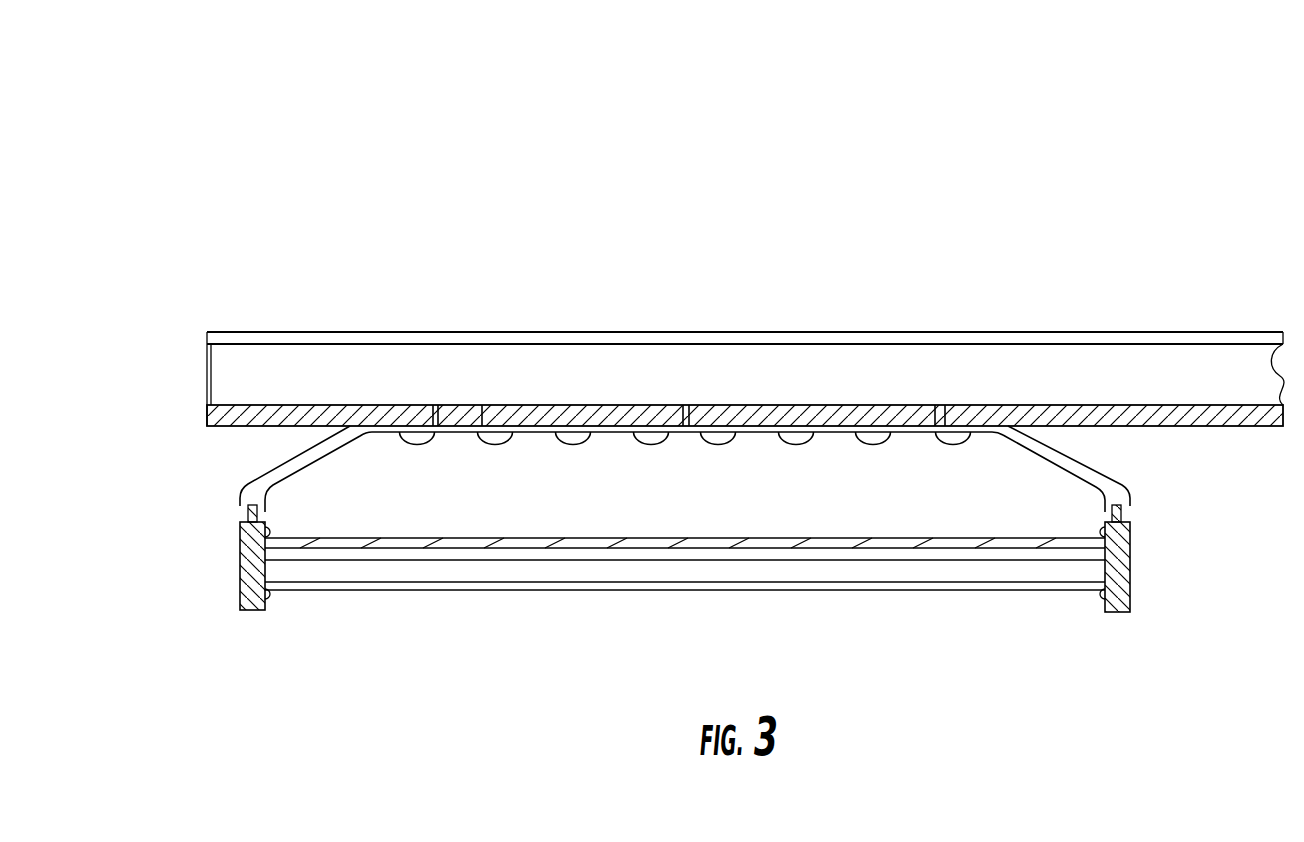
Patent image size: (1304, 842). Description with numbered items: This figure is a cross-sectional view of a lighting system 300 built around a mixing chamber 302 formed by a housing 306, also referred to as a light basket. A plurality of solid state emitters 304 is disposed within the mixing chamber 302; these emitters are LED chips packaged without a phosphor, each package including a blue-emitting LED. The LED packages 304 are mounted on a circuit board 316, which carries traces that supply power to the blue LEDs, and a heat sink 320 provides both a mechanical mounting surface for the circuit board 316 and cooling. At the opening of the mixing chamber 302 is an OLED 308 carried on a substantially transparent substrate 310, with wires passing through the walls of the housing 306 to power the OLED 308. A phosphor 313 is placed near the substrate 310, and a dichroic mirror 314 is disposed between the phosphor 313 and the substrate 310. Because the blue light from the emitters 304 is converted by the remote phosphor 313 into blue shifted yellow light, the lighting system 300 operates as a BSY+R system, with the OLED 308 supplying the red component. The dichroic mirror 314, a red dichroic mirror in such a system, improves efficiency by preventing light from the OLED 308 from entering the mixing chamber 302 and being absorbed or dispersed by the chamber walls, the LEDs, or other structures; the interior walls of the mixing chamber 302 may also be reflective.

The lighting system 300 is at (320, 156).
The mixing chamber 302 is at (769, 509).
The solid state emitters 304 is at (957, 448).
The housing 306 is at (240, 506).
The OLED 308 is at (917, 590).
The substantially transparent substrate 310 is at (739, 570).
The phosphor 313 is at (386, 546).
The dichroic mirror 314 is at (466, 556).
The circuit board 316 is at (207, 413).
The heat sink 320 is at (768, 332).